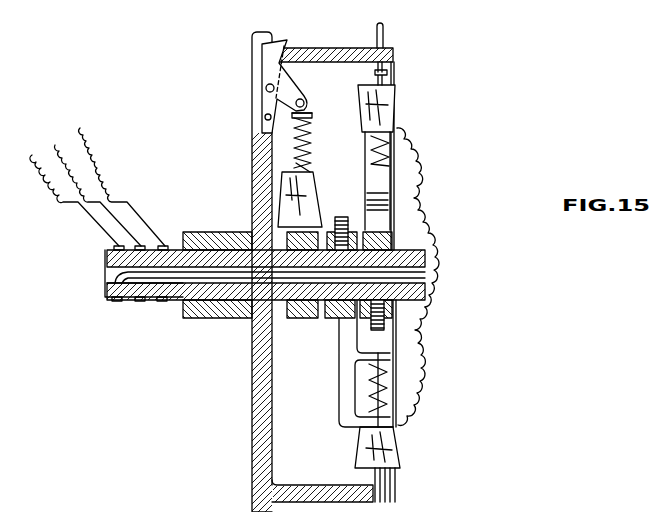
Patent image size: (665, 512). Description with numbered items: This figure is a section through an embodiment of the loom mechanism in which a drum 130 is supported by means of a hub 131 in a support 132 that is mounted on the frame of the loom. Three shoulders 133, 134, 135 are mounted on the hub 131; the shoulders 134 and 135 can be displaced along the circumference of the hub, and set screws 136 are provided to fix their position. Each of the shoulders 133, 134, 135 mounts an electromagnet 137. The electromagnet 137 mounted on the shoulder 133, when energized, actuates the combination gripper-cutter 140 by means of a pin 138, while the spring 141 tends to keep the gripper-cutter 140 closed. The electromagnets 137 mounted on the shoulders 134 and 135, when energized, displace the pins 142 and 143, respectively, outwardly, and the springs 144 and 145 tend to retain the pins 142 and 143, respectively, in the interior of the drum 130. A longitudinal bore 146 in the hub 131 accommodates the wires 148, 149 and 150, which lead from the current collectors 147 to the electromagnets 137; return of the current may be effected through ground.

The drum 130 is at (318, 48).
The hub 131 is at (192, 300).
The support 132 is at (240, 302).
The shoulder 133 is at (300, 318).
The shoulder 134 is at (336, 318).
The shoulder 135 is at (415, 236).
The set screw 136 is at (343, 217).
The electromagnet 137 is at (397, 97).
The pin 138 is at (289, 133).
The combination gripper-cutter 140 is at (268, 85).
The spring 141 is at (296, 135).
The pin 142 is at (385, 30).
The pin 143 is at (393, 411).
The spring 144 is at (397, 152).
The spring 145 is at (398, 372).
The longitudinal bore 146 is at (112, 272).
The current collectors 147 is at (163, 246).
The wire 148 is at (126, 300).
The wire 149 is at (142, 300).
The wire 150 is at (166, 300).